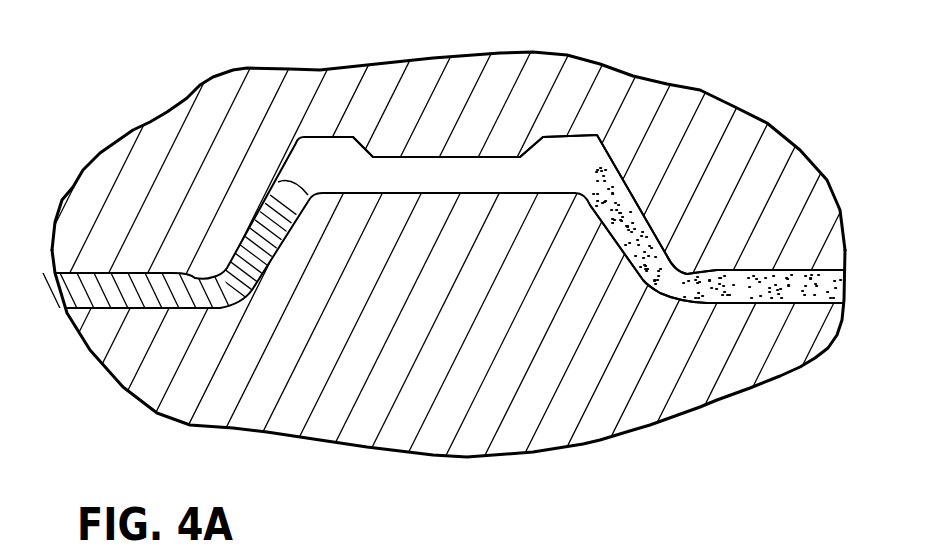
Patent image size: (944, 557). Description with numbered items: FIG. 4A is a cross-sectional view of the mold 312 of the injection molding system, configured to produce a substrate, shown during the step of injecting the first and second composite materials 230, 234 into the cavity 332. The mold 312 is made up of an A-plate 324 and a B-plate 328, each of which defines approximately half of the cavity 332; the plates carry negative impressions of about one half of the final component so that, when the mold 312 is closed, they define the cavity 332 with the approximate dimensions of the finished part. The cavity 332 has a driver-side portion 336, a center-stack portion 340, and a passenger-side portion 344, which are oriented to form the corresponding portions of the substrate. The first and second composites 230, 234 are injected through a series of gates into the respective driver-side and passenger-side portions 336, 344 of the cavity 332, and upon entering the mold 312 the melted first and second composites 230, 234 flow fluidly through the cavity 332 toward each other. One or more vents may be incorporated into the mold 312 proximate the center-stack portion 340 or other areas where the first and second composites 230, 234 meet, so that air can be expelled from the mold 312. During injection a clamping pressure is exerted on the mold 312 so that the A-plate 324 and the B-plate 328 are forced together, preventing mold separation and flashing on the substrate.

The mold 312 is at (797, 80).
The A-plate 324 is at (541, 85).
The B-plate 328 is at (538, 394).
The cavity 332 is at (552, 169).
The driver-side portion 336 is at (767, 268).
The center-stack portion 340 is at (434, 157).
The passenger-side portion 344 is at (126, 272).
The second composite material 234 is at (163, 300).
The first composite material 230 is at (777, 297).